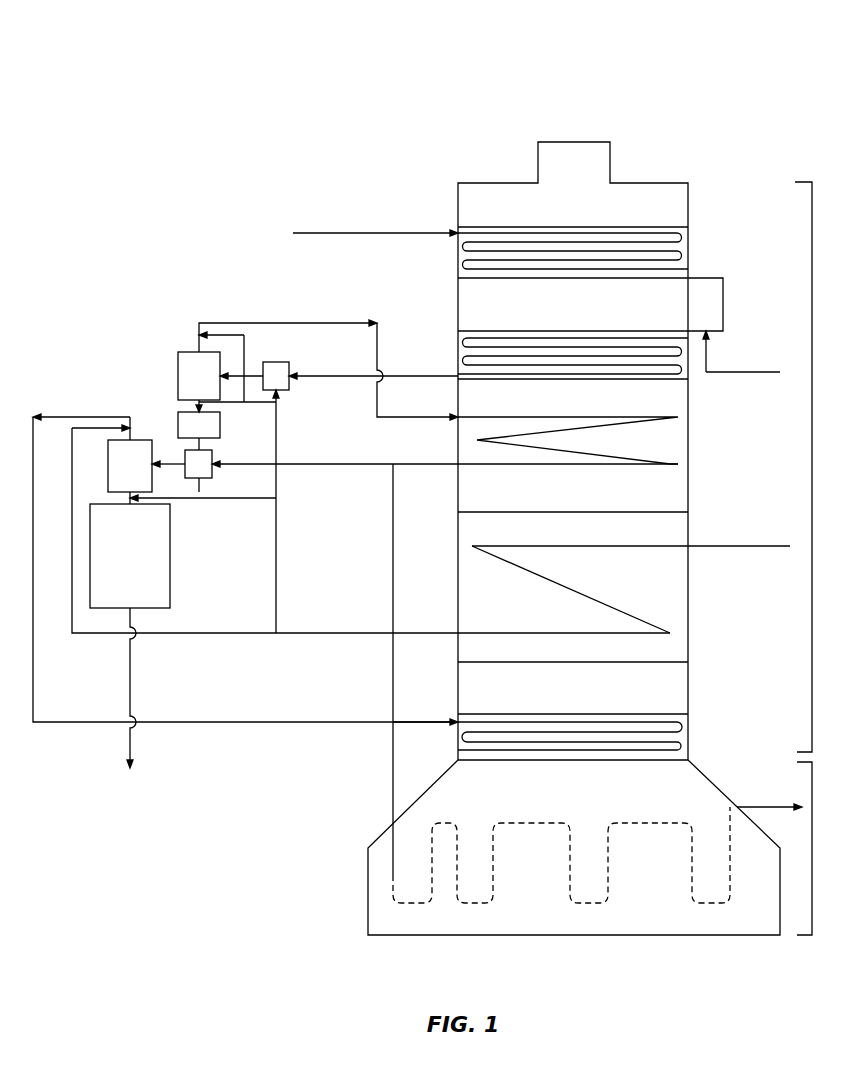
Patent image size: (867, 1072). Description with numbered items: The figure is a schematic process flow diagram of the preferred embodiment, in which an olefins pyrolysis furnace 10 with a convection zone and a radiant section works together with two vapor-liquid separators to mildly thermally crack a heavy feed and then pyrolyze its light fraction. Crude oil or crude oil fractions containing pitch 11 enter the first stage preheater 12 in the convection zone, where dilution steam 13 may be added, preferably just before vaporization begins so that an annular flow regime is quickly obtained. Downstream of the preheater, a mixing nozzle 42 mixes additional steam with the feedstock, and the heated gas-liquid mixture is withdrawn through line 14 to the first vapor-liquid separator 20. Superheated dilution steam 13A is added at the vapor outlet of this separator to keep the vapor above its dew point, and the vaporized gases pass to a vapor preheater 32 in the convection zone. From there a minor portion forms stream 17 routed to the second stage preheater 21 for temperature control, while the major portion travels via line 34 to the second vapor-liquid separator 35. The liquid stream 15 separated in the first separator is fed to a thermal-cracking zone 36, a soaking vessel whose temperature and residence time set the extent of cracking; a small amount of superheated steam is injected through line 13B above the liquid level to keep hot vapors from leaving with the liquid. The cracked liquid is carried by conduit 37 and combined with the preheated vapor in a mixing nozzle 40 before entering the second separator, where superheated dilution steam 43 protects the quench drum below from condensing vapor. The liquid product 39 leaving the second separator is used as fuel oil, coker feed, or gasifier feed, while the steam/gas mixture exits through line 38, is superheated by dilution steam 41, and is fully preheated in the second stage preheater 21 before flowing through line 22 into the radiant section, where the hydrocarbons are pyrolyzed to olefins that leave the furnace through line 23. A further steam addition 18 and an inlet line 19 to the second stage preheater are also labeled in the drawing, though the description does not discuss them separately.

The olefins pyrolysis furnace 10 is at (710, 64).
The crude oil or crude oil fractions containing pitch 11 is at (366, 238).
The first stage preheater 12 is at (467, 245).
The dilution steam 13 is at (732, 373).
The superheated dilution steam 13A is at (248, 333).
The line 13B is at (264, 408).
The line 14 is at (440, 374).
The liquid stream 15 is at (195, 415).
The stream 17 is at (392, 565).
The steam 18 is at (738, 548).
The line to second stage preheater 19 is at (450, 722).
The vapor-liquid separator 20 is at (178, 352).
The second stage preheater 21 is at (690, 742).
The line 22 is at (393, 877).
The line 23 is at (785, 806).
The vapor preheater 32 is at (680, 462).
The line 34 is at (340, 466).
The second vapor-liquid separator 35 is at (130, 435).
The thermal-cracking zone 36 is at (130, 428).
The conduit 37 is at (212, 458).
The line 38 is at (92, 417).
The liquid product 39 is at (135, 760).
The mixing nozzle 40 is at (200, 492).
The dilution steam 41 is at (238, 633).
The mixing nozzle 42 is at (285, 362).
The superheated dilution steam 43 is at (183, 498).